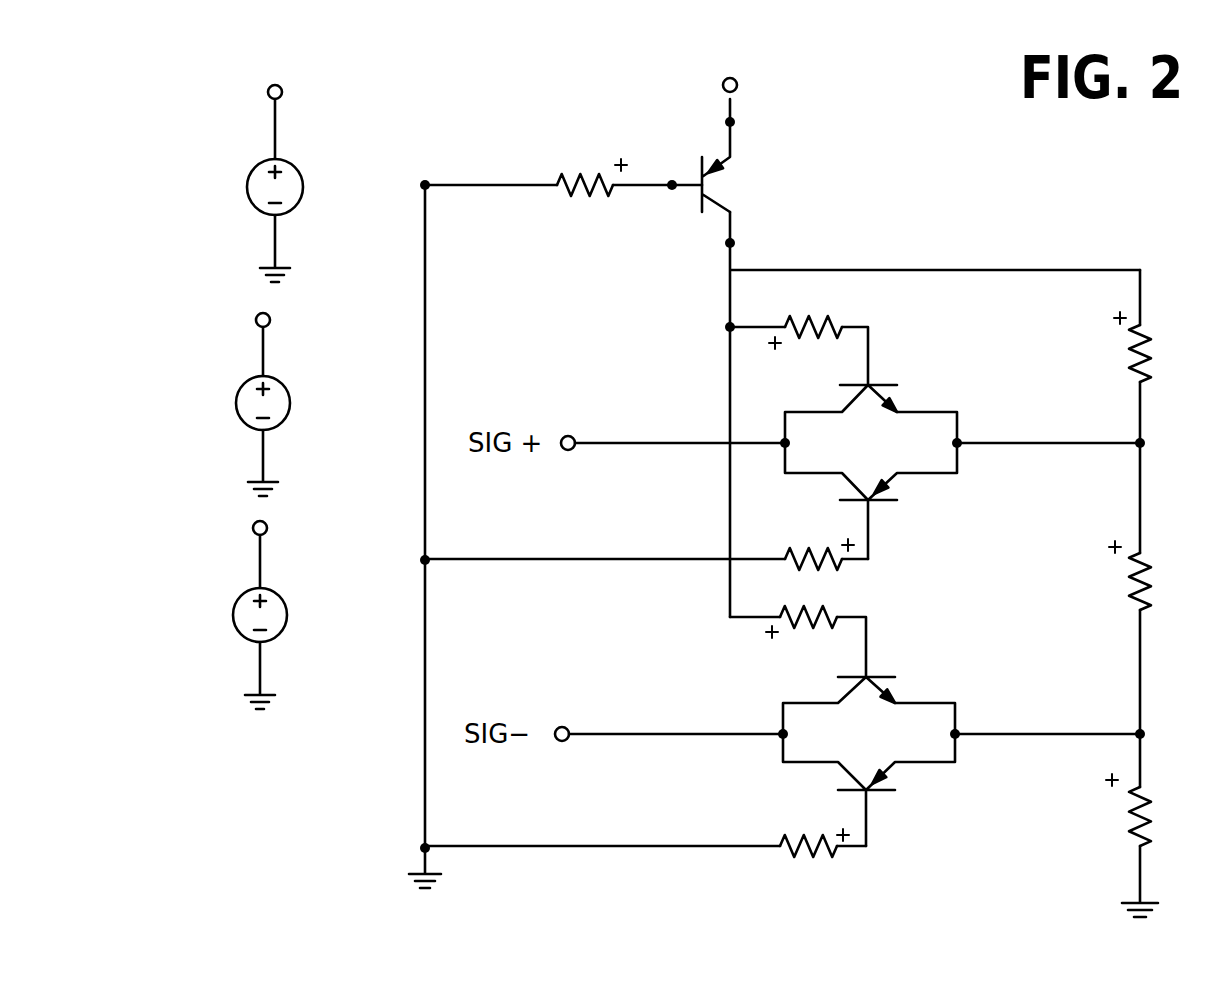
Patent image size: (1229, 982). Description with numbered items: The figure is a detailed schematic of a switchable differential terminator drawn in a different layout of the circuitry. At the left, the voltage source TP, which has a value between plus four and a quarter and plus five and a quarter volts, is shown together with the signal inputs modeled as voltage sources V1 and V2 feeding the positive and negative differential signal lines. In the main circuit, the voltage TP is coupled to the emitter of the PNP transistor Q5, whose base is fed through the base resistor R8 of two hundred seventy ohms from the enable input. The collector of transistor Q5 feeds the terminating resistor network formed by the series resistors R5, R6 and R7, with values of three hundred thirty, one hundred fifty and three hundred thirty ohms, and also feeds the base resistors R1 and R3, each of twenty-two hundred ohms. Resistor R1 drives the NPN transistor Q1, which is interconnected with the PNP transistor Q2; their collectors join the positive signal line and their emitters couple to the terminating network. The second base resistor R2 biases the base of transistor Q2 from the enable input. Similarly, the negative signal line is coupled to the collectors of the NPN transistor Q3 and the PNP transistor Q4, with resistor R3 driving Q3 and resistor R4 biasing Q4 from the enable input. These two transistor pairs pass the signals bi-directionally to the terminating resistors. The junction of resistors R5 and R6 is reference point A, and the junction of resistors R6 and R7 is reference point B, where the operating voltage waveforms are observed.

The voltage TP is at (286, 168).
The positive signal voltage source V1 is at (244, 400).
The negative signal voltage source V2 is at (242, 611).
The base resistor R1 is at (799, 350).
The second base resistor R2 is at (646, 541).
The base resistor R3 is at (798, 641).
The base resistor R4 is at (645, 860).
The terminating resistor R5 is at (1158, 356).
The terminating resistor R6 is at (1162, 588).
The terminating resistor R7 is at (1159, 825).
The base resistor R8 is at (563, 165).
The NPN transistor Q1 is at (900, 388).
The PNP transistor Q2 is at (902, 501).
The NPN transistor Q3 is at (901, 675).
The PNP transistor Q4 is at (901, 790).
The PNP transistor Q5 is at (780, 125).
The reference point A is at (1157, 436).
The reference point B is at (1156, 729).